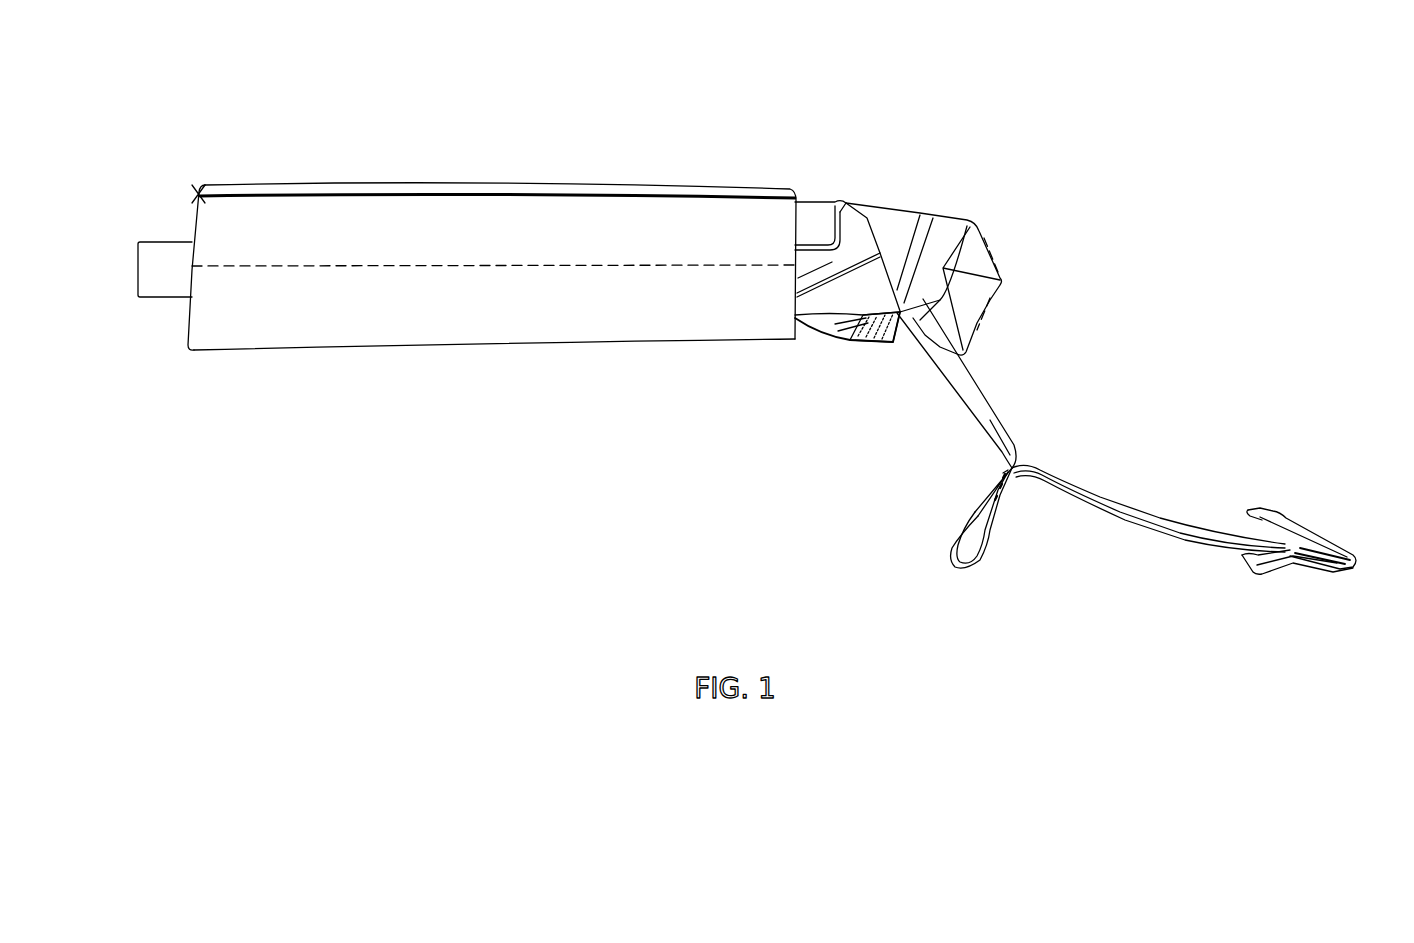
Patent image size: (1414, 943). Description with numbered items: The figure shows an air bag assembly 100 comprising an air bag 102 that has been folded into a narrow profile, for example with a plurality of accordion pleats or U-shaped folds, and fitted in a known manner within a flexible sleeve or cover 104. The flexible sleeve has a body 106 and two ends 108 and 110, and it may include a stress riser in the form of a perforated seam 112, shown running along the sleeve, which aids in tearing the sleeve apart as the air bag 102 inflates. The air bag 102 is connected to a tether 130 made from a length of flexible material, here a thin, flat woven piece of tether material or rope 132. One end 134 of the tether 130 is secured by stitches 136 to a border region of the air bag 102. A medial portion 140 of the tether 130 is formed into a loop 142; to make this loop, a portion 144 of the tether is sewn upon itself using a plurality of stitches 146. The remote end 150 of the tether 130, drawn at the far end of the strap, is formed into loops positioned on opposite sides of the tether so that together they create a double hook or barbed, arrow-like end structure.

The air bag assembly 100 is at (218, 62).
The air bag 102 is at (1014, 277).
The flexible sleeve or cover 104 is at (653, 322).
The body 106 is at (518, 307).
The end 108 is at (768, 215).
The end 110 is at (190, 285).
The perforated seam 112 is at (747, 263).
The tether 130 is at (955, 413).
The tether material 132 is at (988, 407).
The end of the tether 134 is at (856, 345).
The stitches 136 is at (878, 348).
The medial portion 140 is at (1050, 478).
The loop 142 is at (972, 556).
The portion of the tether 144 is at (983, 505).
The stitches 146 is at (1007, 503).
The remote end 150 is at (1312, 502).